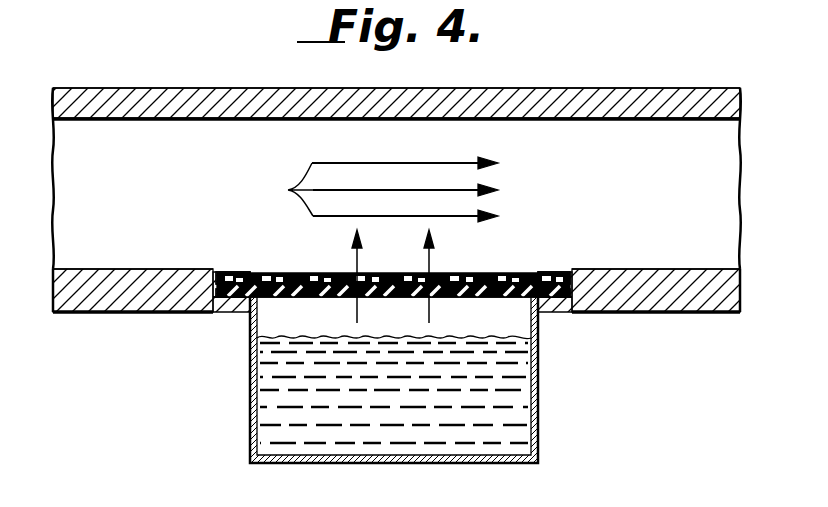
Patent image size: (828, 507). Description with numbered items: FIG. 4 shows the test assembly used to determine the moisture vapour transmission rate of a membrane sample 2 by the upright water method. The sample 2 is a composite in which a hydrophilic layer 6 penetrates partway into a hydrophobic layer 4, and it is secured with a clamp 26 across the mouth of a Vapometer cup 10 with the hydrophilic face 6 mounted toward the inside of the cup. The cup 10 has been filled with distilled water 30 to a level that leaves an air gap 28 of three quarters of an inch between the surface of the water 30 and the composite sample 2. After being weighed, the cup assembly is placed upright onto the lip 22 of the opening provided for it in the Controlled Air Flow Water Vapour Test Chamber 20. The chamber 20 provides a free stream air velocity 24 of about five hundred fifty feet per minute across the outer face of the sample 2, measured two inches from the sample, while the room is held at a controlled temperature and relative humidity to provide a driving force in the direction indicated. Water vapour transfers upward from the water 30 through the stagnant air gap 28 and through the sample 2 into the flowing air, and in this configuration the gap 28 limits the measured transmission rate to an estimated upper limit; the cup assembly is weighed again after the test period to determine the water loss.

The membrane sample 2 is at (297, 272).
The hydrophobic layer 4 is at (390, 280).
The hydrophilic layer 6 is at (474, 280).
The Vapometer cup 10 is at (250, 425).
The Controlled Air Flow Water Vapour Test Chamber 20 is at (113, 277).
The lip 22 is at (230, 300).
The free stream air velocity 24 is at (368, 189).
The clamp 26 is at (243, 272).
The air gap 28 is at (340, 328).
The distilled water 30 is at (412, 419).